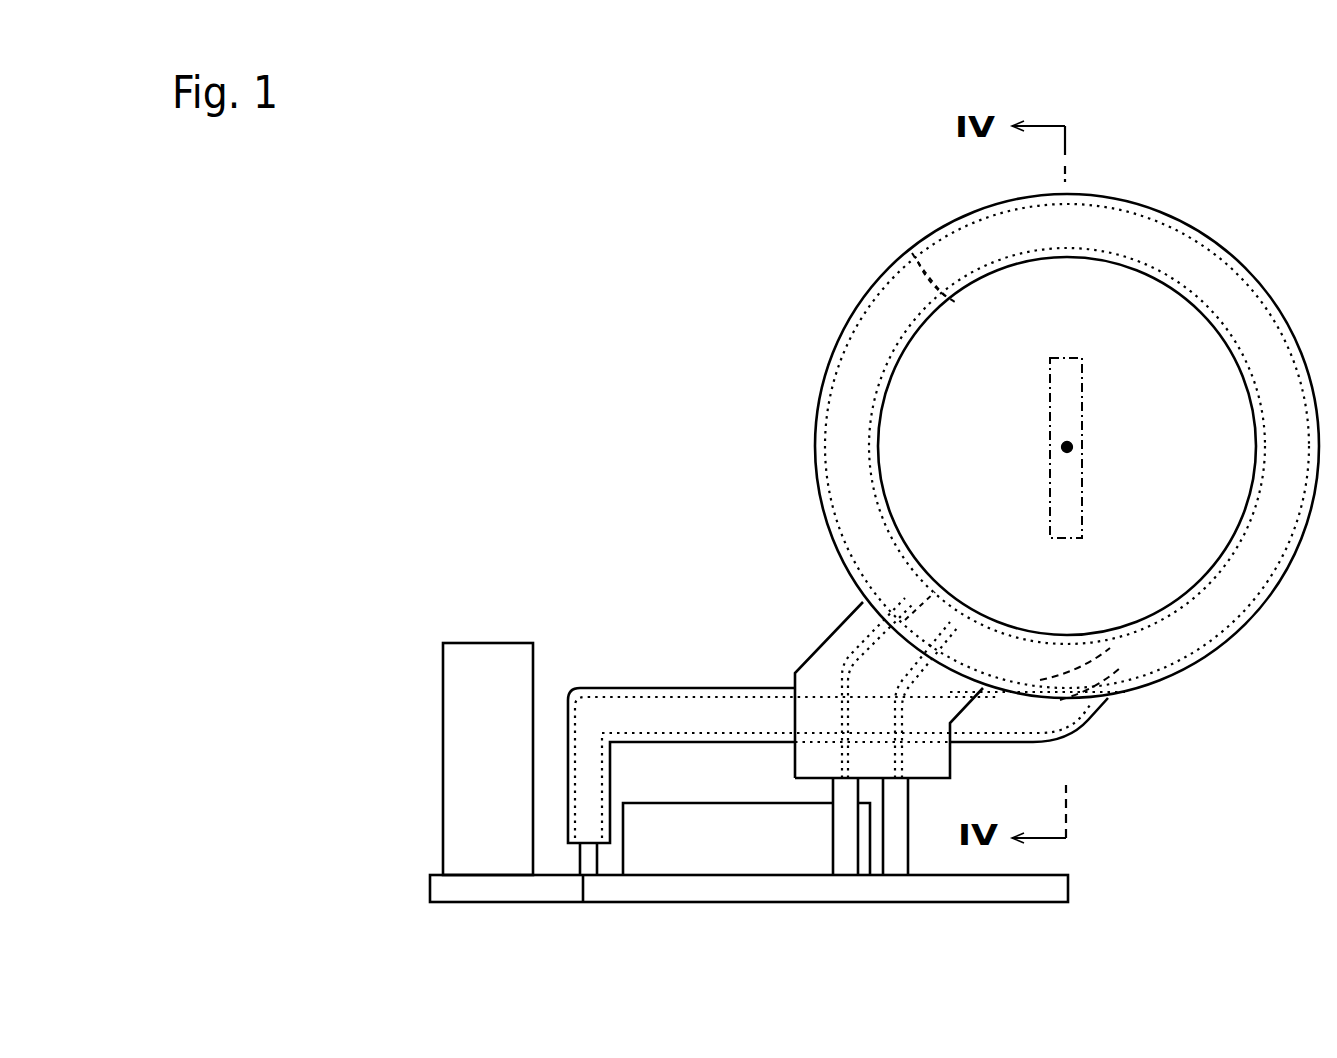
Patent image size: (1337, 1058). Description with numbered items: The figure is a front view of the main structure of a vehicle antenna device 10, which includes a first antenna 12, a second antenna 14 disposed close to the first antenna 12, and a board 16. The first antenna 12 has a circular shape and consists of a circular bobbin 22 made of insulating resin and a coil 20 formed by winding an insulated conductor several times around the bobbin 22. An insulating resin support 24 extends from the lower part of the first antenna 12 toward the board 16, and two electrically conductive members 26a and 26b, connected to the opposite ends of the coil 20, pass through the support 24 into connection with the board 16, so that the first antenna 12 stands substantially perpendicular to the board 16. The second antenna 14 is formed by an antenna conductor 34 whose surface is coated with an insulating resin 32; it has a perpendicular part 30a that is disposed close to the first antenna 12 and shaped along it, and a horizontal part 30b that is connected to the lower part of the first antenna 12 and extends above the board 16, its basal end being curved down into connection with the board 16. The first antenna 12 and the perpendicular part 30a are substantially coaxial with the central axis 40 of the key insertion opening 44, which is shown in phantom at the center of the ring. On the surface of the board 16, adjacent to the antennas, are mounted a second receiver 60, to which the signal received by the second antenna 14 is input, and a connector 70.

The vehicle antenna device 10 is at (607, 311).
The first antenna 12 is at (730, 374).
The second antenna 14 is at (1195, 716).
The board 16 is at (1068, 882).
The coil 20 is at (832, 437).
The bobbin 22 is at (846, 391).
The support 24 is at (818, 660).
The electrically conductive member 26a is at (829, 639).
The electrically conductive member 26b is at (965, 600).
The perpendicular part 30a is at (1070, 698).
The horizontal part 30b is at (990, 744).
The insulating resin 32 is at (1135, 722).
The antenna conductor 34 is at (1020, 706).
The central axis 40 is at (1072, 447).
The key insertion opening 44 is at (1066, 388).
The second receiver 60 is at (707, 888).
The connector 70 is at (466, 762).